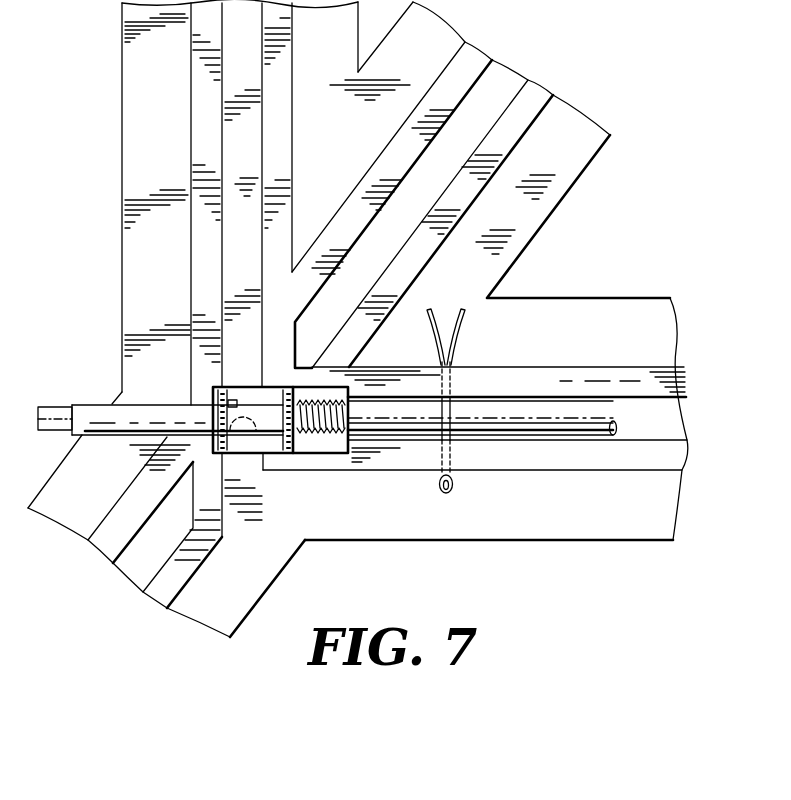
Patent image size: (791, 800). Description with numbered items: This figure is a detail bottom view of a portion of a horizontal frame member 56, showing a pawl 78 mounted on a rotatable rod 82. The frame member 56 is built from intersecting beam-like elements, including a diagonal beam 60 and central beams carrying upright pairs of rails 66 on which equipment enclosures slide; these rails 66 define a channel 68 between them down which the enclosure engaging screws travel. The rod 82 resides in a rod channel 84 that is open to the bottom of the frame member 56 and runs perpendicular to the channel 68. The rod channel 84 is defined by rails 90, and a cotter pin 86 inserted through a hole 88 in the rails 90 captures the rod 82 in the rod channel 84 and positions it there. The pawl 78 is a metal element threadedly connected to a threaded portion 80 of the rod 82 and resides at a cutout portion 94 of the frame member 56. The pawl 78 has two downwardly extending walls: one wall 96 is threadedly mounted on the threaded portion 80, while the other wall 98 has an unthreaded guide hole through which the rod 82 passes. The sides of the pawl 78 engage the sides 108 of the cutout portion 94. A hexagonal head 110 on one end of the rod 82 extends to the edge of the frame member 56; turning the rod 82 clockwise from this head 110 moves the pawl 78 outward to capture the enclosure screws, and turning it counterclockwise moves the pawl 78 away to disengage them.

The horizontal frame member 56 is at (450, 556).
The diagonal beam 60 is at (530, 190).
The rail 66 is at (198, 72).
The channel 68 is at (242, 135).
The pawl 78 is at (280, 443).
The threaded portion 80 is at (333, 432).
The rotatable rod 82 is at (565, 422).
The rod channel 84 is at (657, 418).
The cotter pin 86 is at (452, 490).
The hole 88 is at (452, 378).
The rail 90 is at (530, 372).
The cutout portion 94 is at (315, 445).
The downwardly extending wall 96 is at (303, 378).
The downwardly extending wall 98 is at (213, 413).
The side of cutout portion 108 is at (350, 367).
The hexagonal head 110 is at (53, 407).